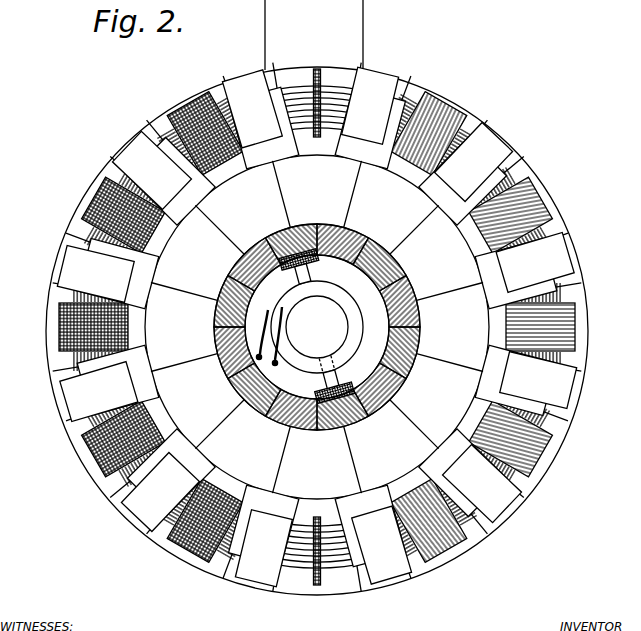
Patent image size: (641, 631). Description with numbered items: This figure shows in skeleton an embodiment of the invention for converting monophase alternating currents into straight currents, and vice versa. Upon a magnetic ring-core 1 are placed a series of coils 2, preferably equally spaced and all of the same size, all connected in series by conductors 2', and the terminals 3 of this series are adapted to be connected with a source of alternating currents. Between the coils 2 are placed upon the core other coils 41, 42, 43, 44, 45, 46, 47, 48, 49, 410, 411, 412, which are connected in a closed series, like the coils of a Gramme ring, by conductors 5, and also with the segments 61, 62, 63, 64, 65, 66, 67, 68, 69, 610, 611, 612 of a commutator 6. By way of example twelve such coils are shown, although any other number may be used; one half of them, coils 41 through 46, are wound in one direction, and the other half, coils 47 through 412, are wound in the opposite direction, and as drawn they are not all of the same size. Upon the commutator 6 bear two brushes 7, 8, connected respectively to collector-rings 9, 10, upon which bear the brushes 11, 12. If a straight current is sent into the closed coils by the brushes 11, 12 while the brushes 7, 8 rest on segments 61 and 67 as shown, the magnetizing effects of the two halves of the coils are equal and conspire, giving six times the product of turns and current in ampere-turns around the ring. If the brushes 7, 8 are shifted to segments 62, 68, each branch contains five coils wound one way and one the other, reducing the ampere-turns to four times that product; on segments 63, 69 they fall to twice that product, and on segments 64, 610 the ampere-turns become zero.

The magnetic ring-core 1 is at (62, 424).
The coil 2 is at (327, 326).
The conductor 2' is at (319, 335).
The terminal 3 is at (315, 35).
The coil 41 is at (317, 92).
The coil 42 is at (447, 110).
The coil 43 is at (542, 200).
The coil 44 is at (577, 318).
The coil 45 is at (547, 447).
The coil 46 is at (447, 547).
The coil 47 is at (317, 583).
The coil 48 is at (205, 555).
The coil 49 is at (95, 462).
The coil 410 is at (62, 320).
The coil 411 is at (97, 195).
The coil 412 is at (203, 95).
The conductor 5 is at (327, 495).
The commutator 6 is at (418, 337).
The commutator segment 61 is at (311, 226).
The commutator segment 62 is at (352, 228).
The commutator segment 63 is at (400, 262).
The commutator segment 64 is at (418, 310).
The commutator segment 65 is at (408, 368).
The commutator segment 66 is at (373, 407).
The commutator segment 67 is at (334, 428).
The commutator segment 68 is at (278, 418).
The commutator segment 69 is at (242, 394).
The commutator segment 610 is at (216, 344).
The commutator segment 611 is at (227, 288).
The commutator segment 612 is at (260, 240).
The brush 7 is at (313, 265).
The brush 8 is at (335, 380).
The collector-ring 9 is at (288, 297).
The collector-ring 10 is at (342, 308).
The brush 11 is at (266, 337).
The brush 12 is at (282, 358).